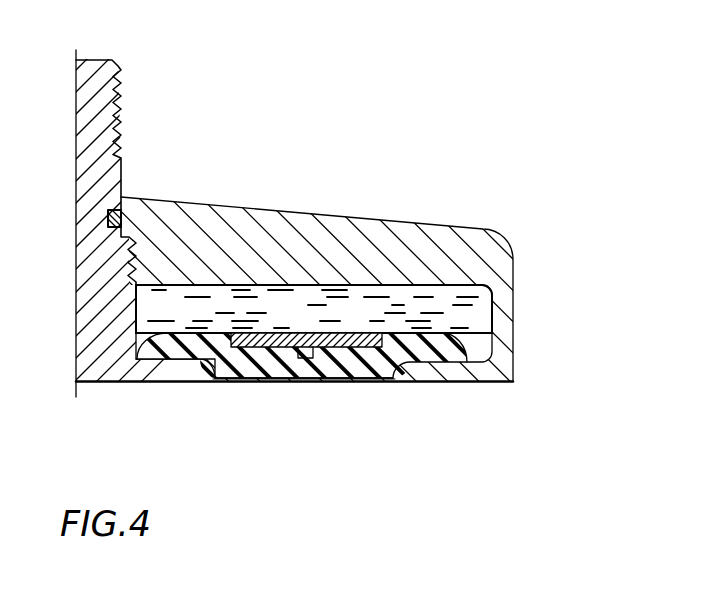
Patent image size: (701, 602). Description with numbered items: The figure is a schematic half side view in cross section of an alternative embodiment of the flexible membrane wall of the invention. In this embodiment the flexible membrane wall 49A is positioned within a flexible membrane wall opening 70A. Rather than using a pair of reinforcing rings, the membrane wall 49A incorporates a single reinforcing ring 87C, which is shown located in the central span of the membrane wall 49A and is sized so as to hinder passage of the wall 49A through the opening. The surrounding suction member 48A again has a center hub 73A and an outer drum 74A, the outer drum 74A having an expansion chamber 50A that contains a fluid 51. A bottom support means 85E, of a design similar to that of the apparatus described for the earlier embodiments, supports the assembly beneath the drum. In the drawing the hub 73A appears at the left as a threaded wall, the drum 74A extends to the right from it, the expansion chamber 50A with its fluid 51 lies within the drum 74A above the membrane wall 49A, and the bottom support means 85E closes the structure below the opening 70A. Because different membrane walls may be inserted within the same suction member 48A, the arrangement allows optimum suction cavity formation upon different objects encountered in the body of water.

The center hub 73A is at (126, 75).
The suction member 48A is at (246, 120).
The outer drum 74A is at (483, 230).
The expansion chamber 50A is at (478, 312).
The fluid 51 is at (487, 342).
The bottom support means 85E is at (473, 383).
The flexible membrane wall 49A is at (247, 383).
The reinforcing ring 87C is at (307, 382).
The flexible membrane wall opening 70A is at (388, 408).